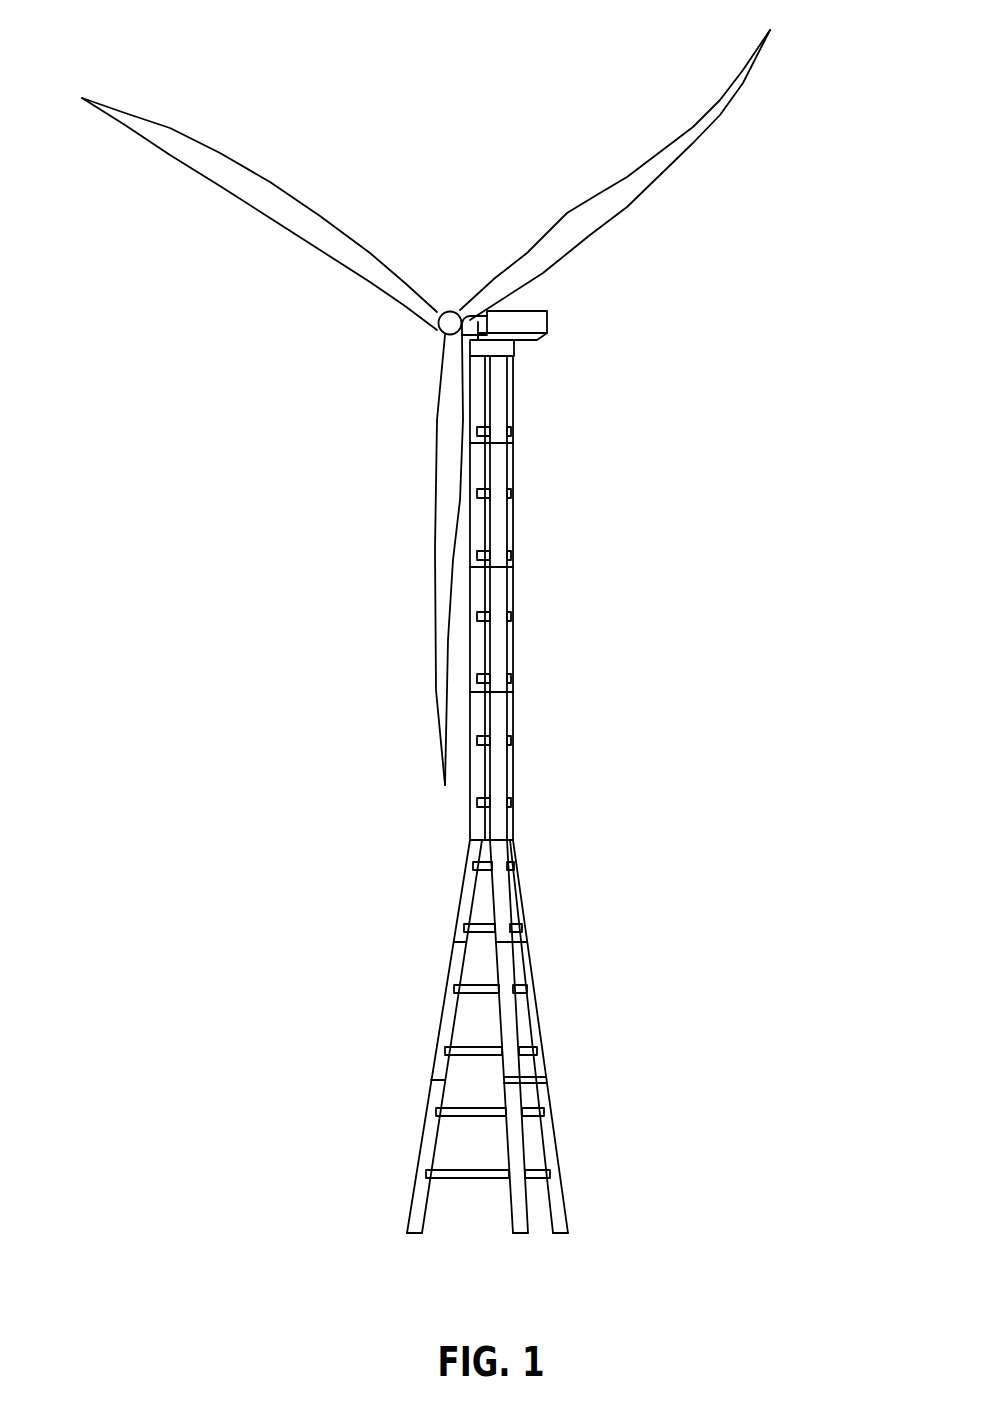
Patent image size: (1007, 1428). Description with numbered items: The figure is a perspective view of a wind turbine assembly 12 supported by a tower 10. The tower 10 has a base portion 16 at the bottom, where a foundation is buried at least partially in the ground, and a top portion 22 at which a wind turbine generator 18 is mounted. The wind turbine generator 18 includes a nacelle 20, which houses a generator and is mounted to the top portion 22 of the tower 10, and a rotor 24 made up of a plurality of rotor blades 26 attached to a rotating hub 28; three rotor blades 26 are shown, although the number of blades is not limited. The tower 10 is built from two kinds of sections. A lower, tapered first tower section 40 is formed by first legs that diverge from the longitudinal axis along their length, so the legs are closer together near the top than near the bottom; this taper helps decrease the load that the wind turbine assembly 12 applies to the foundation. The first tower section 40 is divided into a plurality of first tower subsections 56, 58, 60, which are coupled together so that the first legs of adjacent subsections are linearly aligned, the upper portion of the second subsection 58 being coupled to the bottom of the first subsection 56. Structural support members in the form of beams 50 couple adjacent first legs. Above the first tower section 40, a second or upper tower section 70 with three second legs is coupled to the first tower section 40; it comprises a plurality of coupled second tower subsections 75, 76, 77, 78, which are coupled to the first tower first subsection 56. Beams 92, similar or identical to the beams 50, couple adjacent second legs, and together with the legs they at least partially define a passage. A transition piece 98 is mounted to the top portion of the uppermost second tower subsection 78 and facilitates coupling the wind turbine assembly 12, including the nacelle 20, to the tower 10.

The tower 10 is at (662, 331).
The wind turbine assembly 12 is at (470, 141).
The base portion 16 is at (609, 1193).
The wind turbine generator 18 is at (586, 292).
The nacelle 20 is at (537, 320).
The top portion 22 is at (543, 381).
The rotor 24 is at (412, 366).
The rotor blades 26 is at (302, 235).
The rotating hub 28 is at (442, 333).
The first tower section 40 is at (609, 1007).
The beam 50 is at (505, 1050).
The first tower first subsection 56 is at (470, 878).
The first tower second subsection 58 is at (473, 988).
The first tower third subsection 60 is at (433, 1097).
The second tower section 70 is at (609, 712).
The second tower subsection 75 is at (512, 780).
The second tower subsection 76 is at (512, 637).
The second tower subsection 77 is at (512, 530).
The second tower subsection 78 is at (512, 413).
The beam 92 is at (505, 803).
The transition piece 98 is at (502, 348).